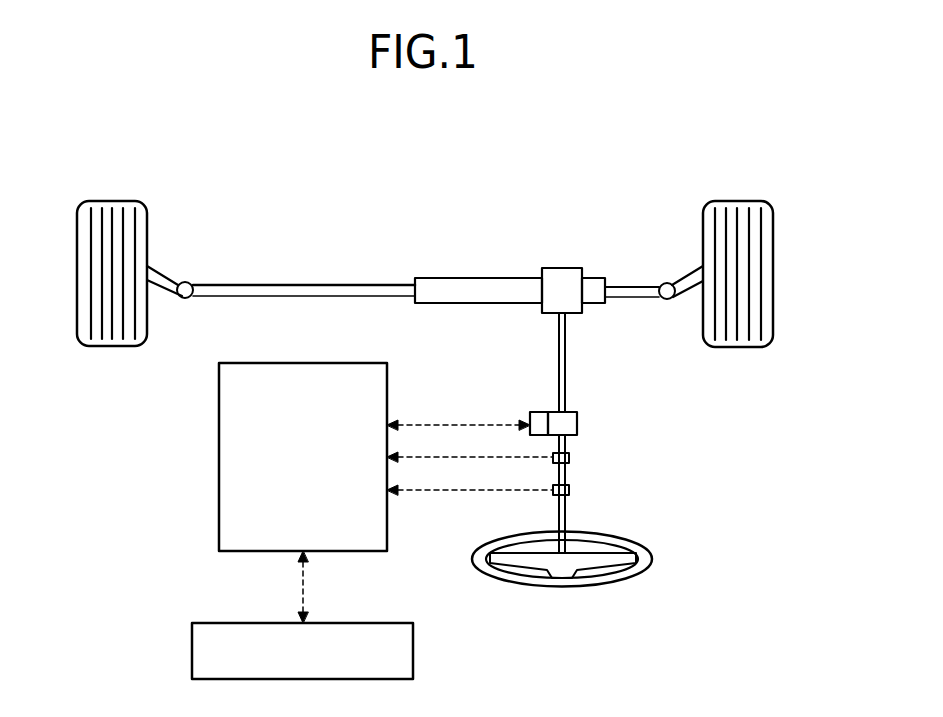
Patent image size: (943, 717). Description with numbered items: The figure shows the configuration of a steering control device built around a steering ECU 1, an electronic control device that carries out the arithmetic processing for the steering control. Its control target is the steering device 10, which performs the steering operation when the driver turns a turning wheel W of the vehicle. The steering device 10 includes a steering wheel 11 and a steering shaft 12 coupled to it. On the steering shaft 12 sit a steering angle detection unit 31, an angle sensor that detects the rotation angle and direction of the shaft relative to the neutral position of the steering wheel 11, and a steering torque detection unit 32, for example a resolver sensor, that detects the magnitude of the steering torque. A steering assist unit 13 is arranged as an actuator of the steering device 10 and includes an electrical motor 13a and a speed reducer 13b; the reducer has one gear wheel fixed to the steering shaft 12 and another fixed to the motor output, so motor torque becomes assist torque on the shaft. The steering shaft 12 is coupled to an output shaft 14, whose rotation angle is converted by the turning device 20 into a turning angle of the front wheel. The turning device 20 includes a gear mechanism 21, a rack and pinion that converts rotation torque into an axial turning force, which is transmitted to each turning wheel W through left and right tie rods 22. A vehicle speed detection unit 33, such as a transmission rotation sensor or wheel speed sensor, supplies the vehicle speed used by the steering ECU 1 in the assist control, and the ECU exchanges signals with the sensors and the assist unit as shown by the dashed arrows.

The steering ECU 1 is at (219, 405).
The steering device 10 is at (643, 423).
The steering wheel 11 is at (648, 548).
The steering shaft 12 is at (557, 518).
The steering assist unit 13 is at (507, 377).
The electrical motor 13a is at (530, 412).
The speed reducer 13b is at (538, 402).
The output shaft 14 is at (568, 348).
The turning device 20 is at (425, 227).
The gear mechanism 21 is at (525, 281).
The tie rod 22 is at (388, 282).
The steering angle detection unit 31 is at (572, 453).
The steering torque detection unit 32 is at (572, 487).
The vehicle speed detection unit 33 is at (413, 645).
The turning wheel W is at (147, 247).